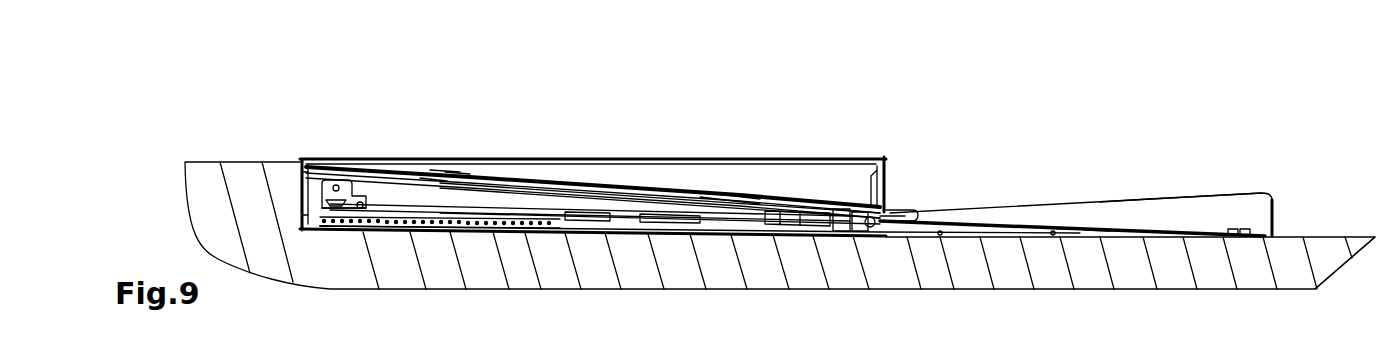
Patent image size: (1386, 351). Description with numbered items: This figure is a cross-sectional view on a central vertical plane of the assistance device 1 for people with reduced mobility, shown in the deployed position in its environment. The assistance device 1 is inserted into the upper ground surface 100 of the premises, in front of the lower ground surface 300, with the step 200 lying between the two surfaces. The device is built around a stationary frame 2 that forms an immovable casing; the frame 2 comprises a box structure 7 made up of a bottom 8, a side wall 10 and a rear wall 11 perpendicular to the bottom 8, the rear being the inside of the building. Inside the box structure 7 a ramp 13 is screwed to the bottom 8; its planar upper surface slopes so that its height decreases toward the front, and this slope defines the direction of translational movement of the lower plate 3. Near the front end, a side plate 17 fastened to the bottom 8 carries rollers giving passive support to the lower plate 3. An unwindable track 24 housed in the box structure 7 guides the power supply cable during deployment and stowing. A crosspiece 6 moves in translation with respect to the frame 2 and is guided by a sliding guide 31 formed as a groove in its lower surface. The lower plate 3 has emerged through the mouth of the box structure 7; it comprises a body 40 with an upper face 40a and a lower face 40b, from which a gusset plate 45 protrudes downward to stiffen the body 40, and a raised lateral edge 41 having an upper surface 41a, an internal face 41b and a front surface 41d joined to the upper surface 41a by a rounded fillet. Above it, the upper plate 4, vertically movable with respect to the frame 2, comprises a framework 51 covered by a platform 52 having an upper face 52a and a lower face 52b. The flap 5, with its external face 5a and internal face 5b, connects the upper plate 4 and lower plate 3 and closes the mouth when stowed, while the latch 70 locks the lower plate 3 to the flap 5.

The assistance device 1 is at (850, 105).
The frame 2 is at (386, 240).
The lower plate 3 is at (1081, 185).
The upper plate 4 is at (665, 172).
The flap 5 is at (925, 198).
The external face 5a is at (897, 207).
The internal face 5b is at (900, 230).
The crosspiece 6 is at (745, 208).
The box structure 7 is at (617, 170).
The bottom 8 is at (627, 230).
The side wall 10 is at (822, 168).
The rear wall 11 is at (297, 192).
The ramp 13 is at (597, 227).
The side plate 17 is at (877, 237).
The unwindable track 24 is at (337, 230).
The sliding guide 31 is at (793, 233).
The body 40 is at (1120, 225).
The upper face 40a is at (1065, 223).
The lower face 40b is at (1097, 240).
The raised lateral edge 41 is at (1183, 213).
The upper surface 41a is at (1137, 207).
The internal face 41b is at (1240, 207).
The front surface 41d is at (1273, 218).
The gusset plate 45 is at (1017, 237).
The framework 51 is at (447, 163).
The platform 52 is at (557, 180).
The upper face 52a is at (460, 163).
The lower face 52b is at (447, 180).
The latch 70 is at (846, 250).
The upper ground surface 100 is at (240, 160).
The step 200 is at (330, 178).
The lower ground surface 300 is at (1330, 235).